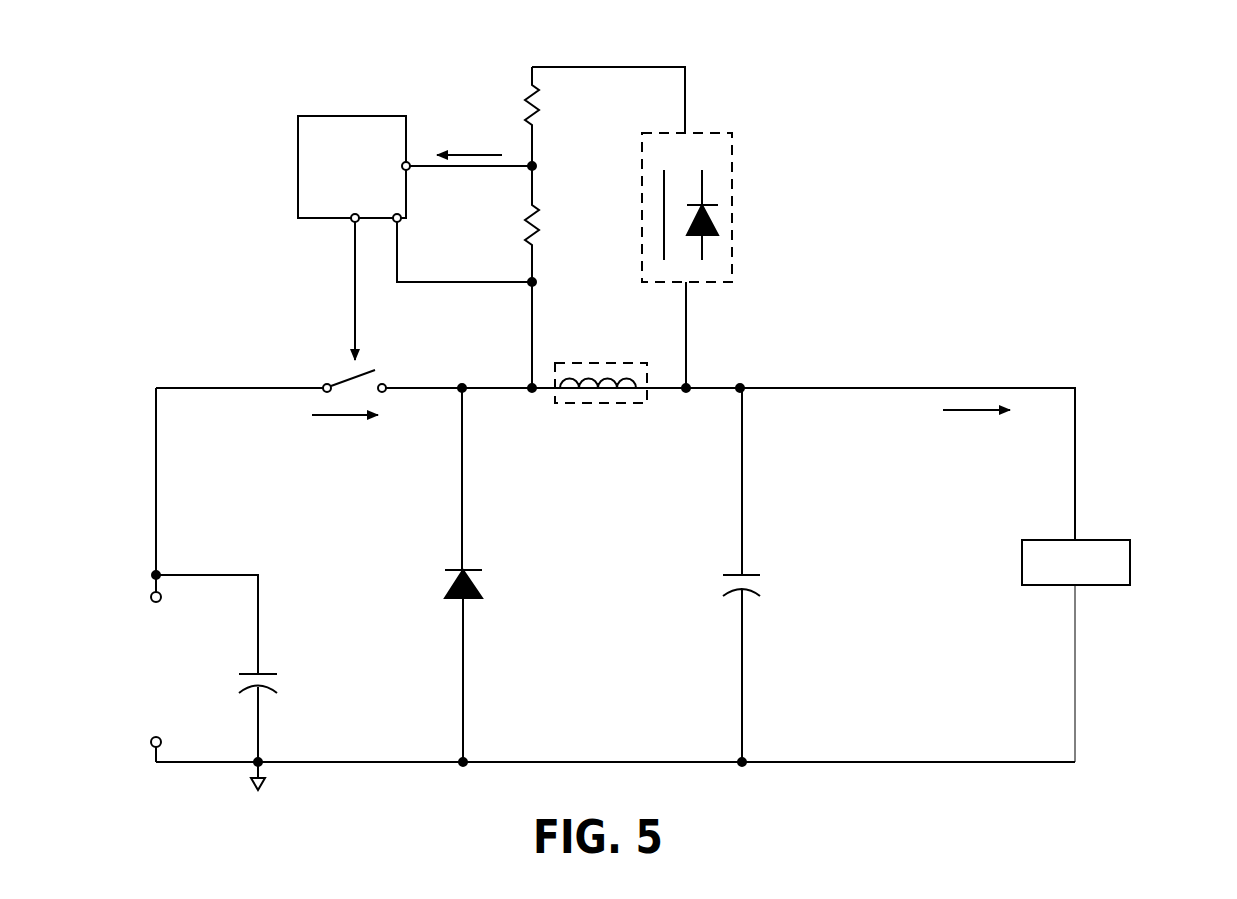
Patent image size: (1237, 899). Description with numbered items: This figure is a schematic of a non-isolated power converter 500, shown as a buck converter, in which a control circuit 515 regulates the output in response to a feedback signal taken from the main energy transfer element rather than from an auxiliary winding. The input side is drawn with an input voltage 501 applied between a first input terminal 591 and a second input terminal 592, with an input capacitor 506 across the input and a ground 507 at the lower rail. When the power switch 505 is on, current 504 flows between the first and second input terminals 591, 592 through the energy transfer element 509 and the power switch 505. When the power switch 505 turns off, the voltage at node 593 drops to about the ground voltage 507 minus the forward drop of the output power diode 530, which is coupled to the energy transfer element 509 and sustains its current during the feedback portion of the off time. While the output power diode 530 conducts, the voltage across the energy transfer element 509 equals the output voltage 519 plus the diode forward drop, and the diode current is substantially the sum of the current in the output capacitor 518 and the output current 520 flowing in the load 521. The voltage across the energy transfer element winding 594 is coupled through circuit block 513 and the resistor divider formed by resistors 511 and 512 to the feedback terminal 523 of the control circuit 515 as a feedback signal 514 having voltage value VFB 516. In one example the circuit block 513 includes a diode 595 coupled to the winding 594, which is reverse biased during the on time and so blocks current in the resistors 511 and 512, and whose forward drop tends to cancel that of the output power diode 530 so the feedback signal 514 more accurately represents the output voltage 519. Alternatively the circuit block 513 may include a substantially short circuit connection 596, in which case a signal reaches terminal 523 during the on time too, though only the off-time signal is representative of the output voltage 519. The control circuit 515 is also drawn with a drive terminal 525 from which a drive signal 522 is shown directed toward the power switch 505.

The power converter 500 is at (150, 331).
The input voltage VIN 501 is at (128, 688).
The current 504 is at (305, 443).
The power switch 505 is at (340, 370).
The input capacitor 506 is at (285, 690).
The ground voltage 507 is at (258, 790).
The energy transfer element 509 is at (592, 402).
The resistor 511 is at (545, 67).
The resistor 512 is at (547, 213).
The circuit block 513 is at (743, 163).
The feedback signal 514 is at (468, 147).
The control circuit 515 is at (340, 112).
The voltage value VFB 516 is at (439, 212).
The output capacitor 518 is at (783, 550).
The output voltage 519 is at (898, 585).
The output current 520 is at (978, 447).
The load 521 is at (1137, 565).
The drive signal 522 is at (362, 283).
The feedback terminal 523 is at (443, 137).
The drive terminal 525 is at (350, 224).
The output power diode 530 is at (525, 565).
The first input terminal 591 is at (140, 595).
The second input terminal 592 is at (140, 760).
The node 593 is at (453, 402).
The energy transfer element winding 594 is at (590, 375).
The diode 595 is at (725, 215).
The substantially short circuit connection 596 is at (655, 245).